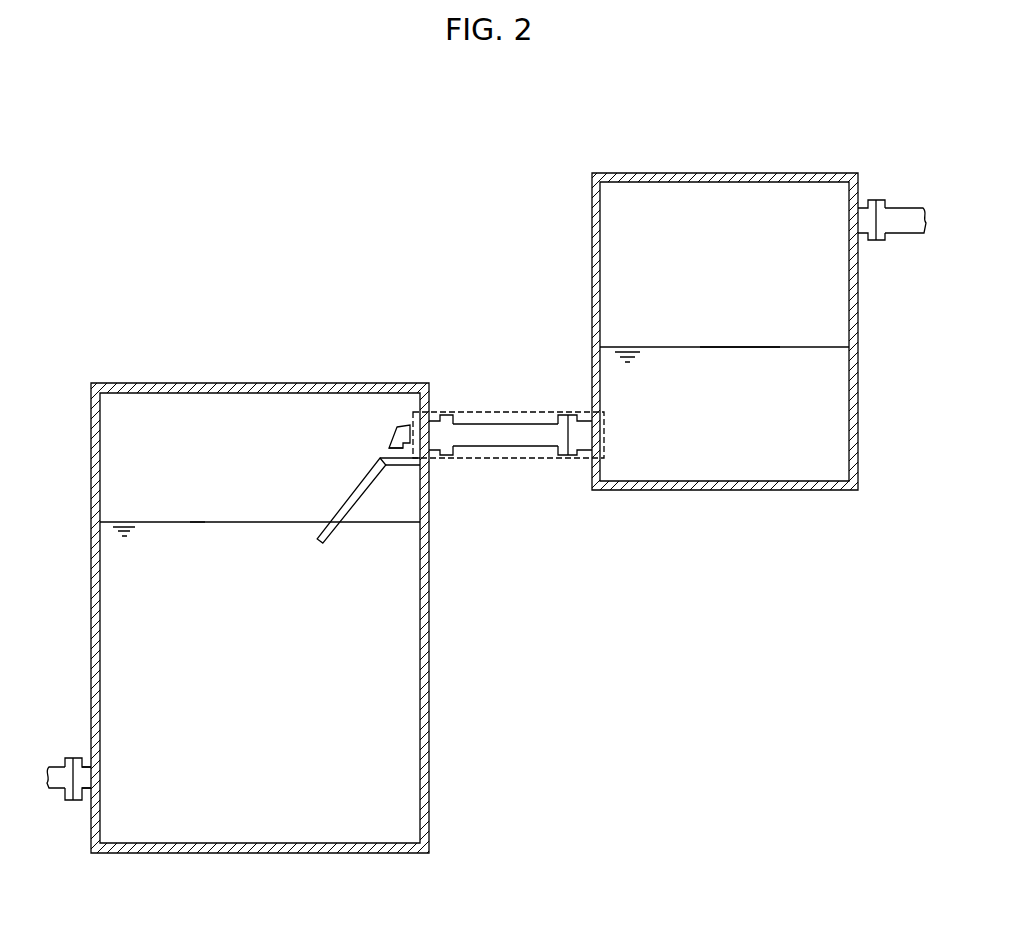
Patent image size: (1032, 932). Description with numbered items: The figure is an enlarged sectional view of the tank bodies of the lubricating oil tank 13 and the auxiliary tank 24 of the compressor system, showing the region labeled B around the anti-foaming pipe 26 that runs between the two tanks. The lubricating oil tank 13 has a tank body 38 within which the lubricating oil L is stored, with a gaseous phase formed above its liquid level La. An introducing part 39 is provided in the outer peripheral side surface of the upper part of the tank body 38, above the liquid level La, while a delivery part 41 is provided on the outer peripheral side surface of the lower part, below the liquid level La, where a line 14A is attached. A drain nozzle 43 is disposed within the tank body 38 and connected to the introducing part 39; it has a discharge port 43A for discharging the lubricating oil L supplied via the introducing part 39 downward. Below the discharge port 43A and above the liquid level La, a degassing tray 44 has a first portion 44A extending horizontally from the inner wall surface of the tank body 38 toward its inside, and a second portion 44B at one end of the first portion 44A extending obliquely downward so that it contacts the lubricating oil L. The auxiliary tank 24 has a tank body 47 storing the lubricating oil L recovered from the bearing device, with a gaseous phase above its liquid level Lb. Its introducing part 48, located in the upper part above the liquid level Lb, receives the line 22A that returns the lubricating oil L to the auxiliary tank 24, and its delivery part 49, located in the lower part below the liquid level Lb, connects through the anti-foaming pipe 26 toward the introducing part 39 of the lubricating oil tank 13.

The lubricating oil tank 13 is at (260, 563).
The tank body 38 is at (216, 382).
The inlet pipe 14A is at (55, 767).
The delivery part 41 is at (88, 792).
The lubricating oil L is at (415, 740).
The liquid level La is at (197, 521).
The liquid level Lb is at (746, 347).
The auxiliary tank 24 is at (725, 285).
The tank body 47 is at (697, 172).
The introducing part 48 is at (864, 208).
The line 22A is at (905, 233).
The anti-foaming pipe 26 is at (531, 412).
The connection region B is at (488, 411).
The introducing part 39 is at (433, 416).
The delivery part 49 is at (592, 418).
The drain nozzle 43 is at (387, 411).
The discharge port 43A is at (392, 452).
The degassing tray 44 is at (331, 405).
The first portion 44A is at (379, 456).
The second portion 44B is at (357, 485).